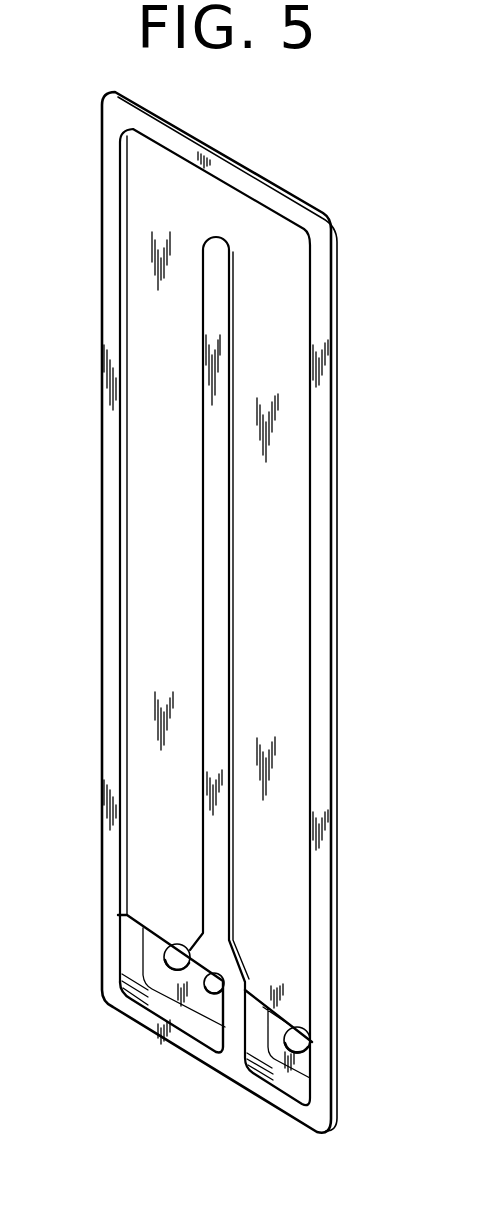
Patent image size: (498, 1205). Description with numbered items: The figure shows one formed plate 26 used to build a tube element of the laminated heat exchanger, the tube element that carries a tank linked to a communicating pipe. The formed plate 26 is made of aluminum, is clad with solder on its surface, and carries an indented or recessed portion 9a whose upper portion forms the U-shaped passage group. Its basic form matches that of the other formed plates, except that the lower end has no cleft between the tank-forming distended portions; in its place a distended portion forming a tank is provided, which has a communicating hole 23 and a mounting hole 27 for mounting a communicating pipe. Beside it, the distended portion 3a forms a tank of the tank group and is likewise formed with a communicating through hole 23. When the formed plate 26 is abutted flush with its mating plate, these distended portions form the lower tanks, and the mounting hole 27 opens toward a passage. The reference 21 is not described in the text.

The base plate / frame 21 is at (322, 653).
The formed plate 26 is at (336, 232).
The recessed portion 9a is at (297, 520).
The distended portion forming a tank 3a is at (277, 1083).
The communicating hole 23 is at (167, 955).
The mounting hole 27 is at (211, 990).